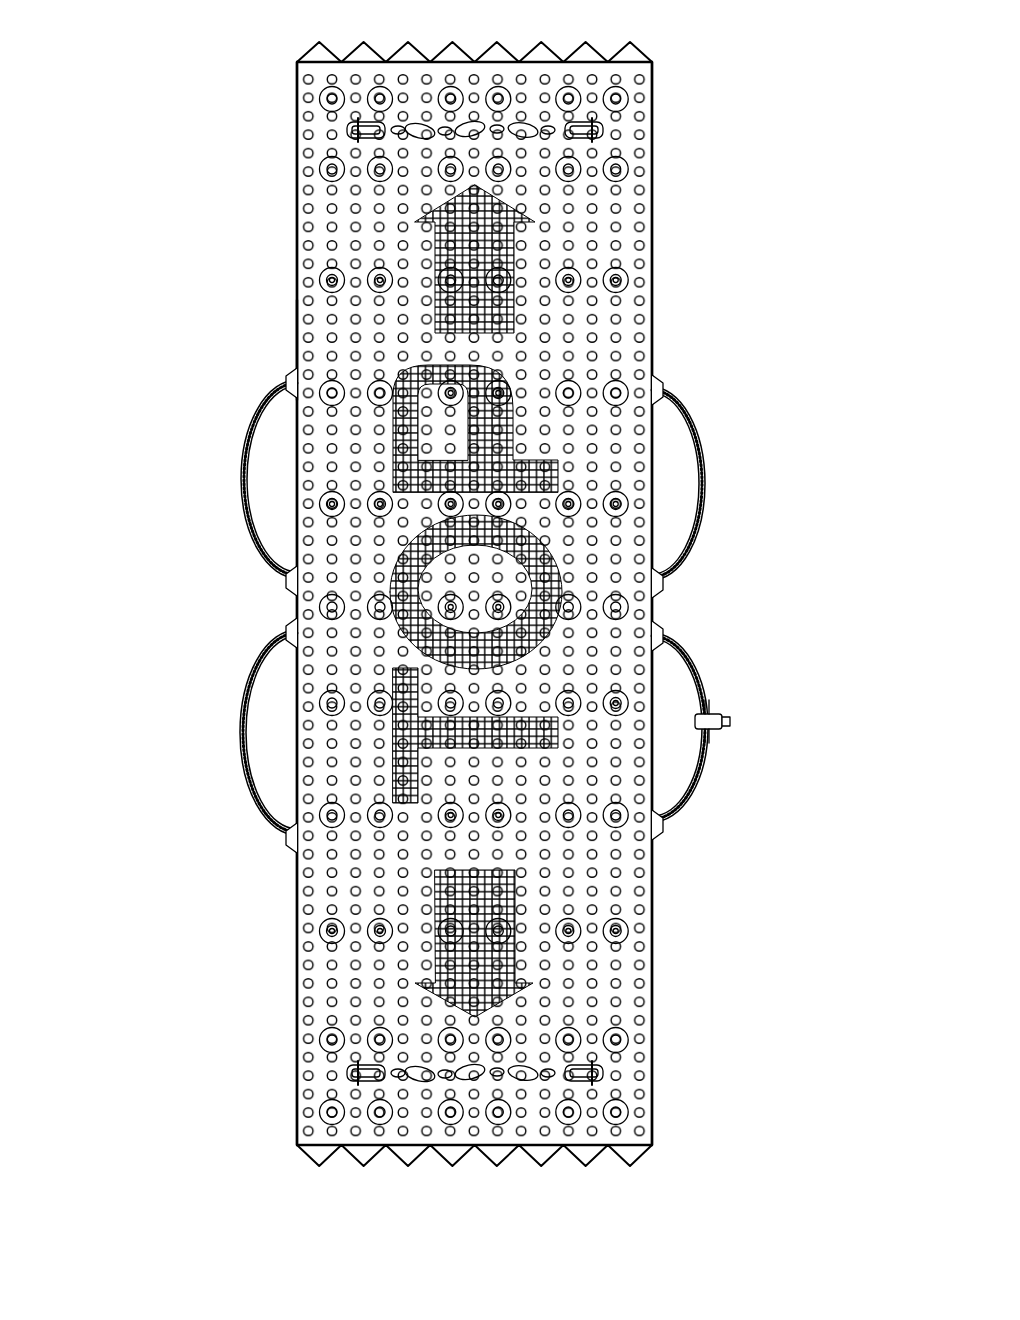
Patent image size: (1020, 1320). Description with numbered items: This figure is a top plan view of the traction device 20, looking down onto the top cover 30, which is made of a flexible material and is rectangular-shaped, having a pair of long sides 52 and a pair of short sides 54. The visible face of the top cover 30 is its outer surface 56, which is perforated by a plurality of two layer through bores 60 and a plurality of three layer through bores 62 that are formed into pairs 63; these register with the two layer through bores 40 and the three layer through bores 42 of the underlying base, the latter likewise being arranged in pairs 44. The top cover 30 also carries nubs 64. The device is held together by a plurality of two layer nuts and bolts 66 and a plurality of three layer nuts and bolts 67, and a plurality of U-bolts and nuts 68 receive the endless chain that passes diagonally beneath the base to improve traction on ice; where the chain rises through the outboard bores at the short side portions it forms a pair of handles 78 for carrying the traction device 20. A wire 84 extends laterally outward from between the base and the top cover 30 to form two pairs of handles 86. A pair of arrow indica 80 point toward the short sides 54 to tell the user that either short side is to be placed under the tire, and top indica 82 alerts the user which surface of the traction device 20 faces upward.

The traction device 20 is at (147, 271).
The top cover 30 is at (321, 191).
The two layer through bores 40 is at (703, 480).
The three layer through bores 42 is at (392, 601).
The pairs 44 is at (418, 522).
The long sides 52 is at (296, 230).
The short sides 54 is at (387, 51).
The outer surface 56 is at (352, 310).
The two layer through bores 60 is at (627, 411).
The three layer through bores 62 is at (392, 601).
The pairs 63 is at (392, 601).
The nubs 64 is at (299, 349).
The two layer nuts and bolts 66 is at (319, 833).
The three layer nuts and bolts 67 is at (391, 616).
The U-bolts and nuts 68 is at (317, 507).
The handles 78 is at (527, 1085).
The arrow indica 80 is at (493, 318).
The top indica 82 is at (405, 801).
The wire 84 is at (429, 610).
The handles 86 is at (239, 721).